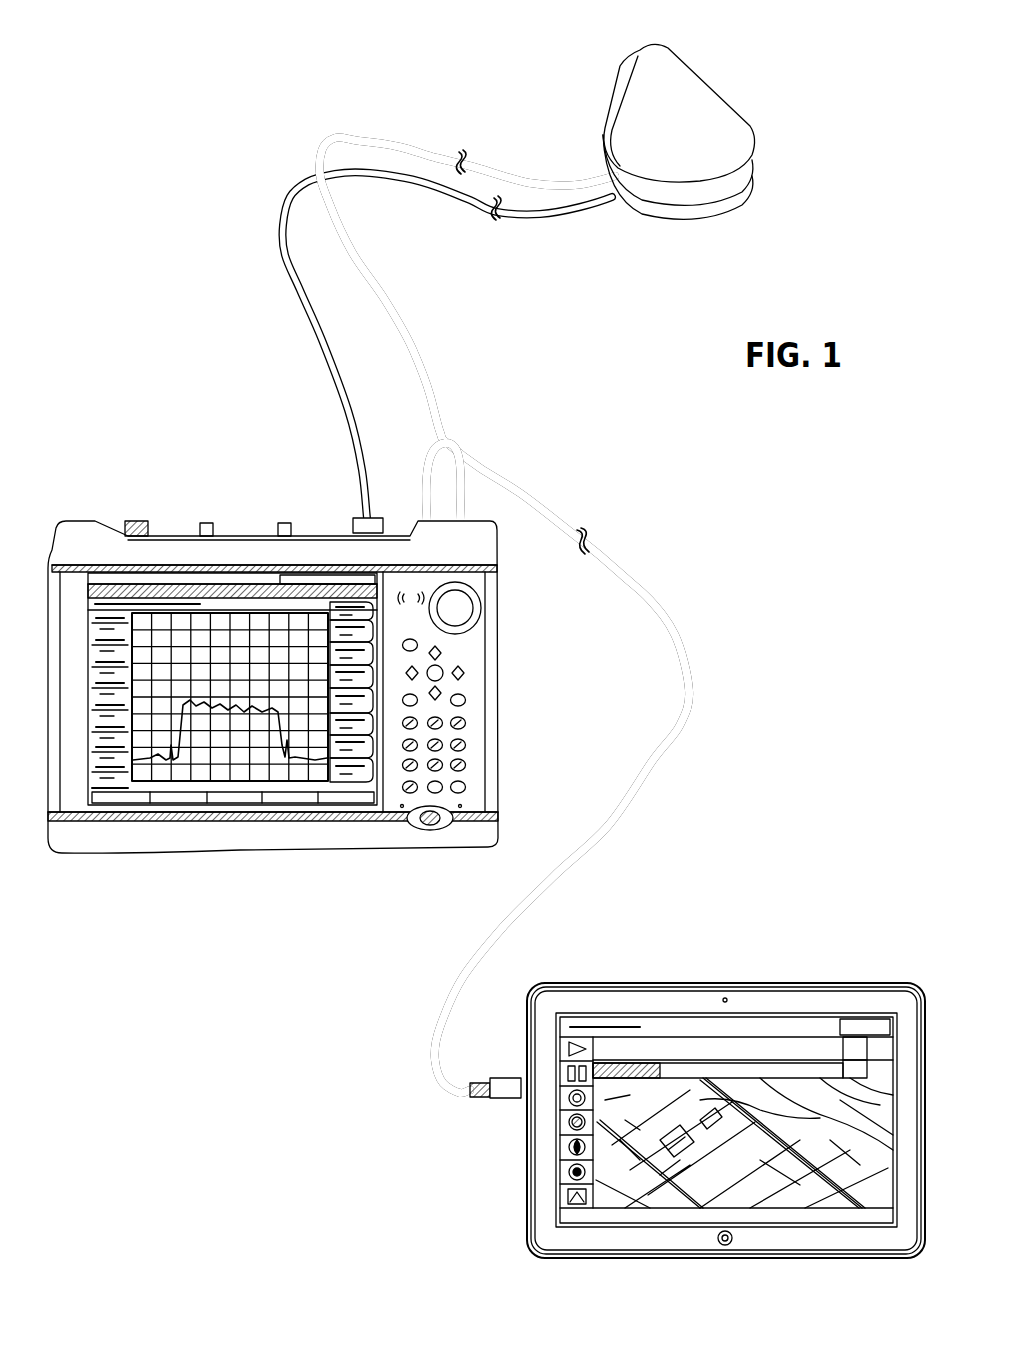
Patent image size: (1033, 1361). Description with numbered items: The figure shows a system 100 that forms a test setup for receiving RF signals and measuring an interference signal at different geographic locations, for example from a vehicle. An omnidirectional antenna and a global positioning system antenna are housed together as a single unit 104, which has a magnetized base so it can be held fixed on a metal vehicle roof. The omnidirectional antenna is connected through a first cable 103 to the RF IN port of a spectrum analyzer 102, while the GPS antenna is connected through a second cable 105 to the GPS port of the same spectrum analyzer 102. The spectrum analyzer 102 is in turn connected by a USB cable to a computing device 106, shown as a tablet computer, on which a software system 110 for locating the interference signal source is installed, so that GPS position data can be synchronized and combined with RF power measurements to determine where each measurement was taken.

The test system 100 is at (197, 56).
The spectrum analyzer 102 is at (152, 520).
The first cable 103 is at (286, 320).
The single unit 104 is at (601, 88).
The second cable 105 is at (396, 307).
The computing device 106 is at (652, 968).
The map display 110 is at (603, 1200).